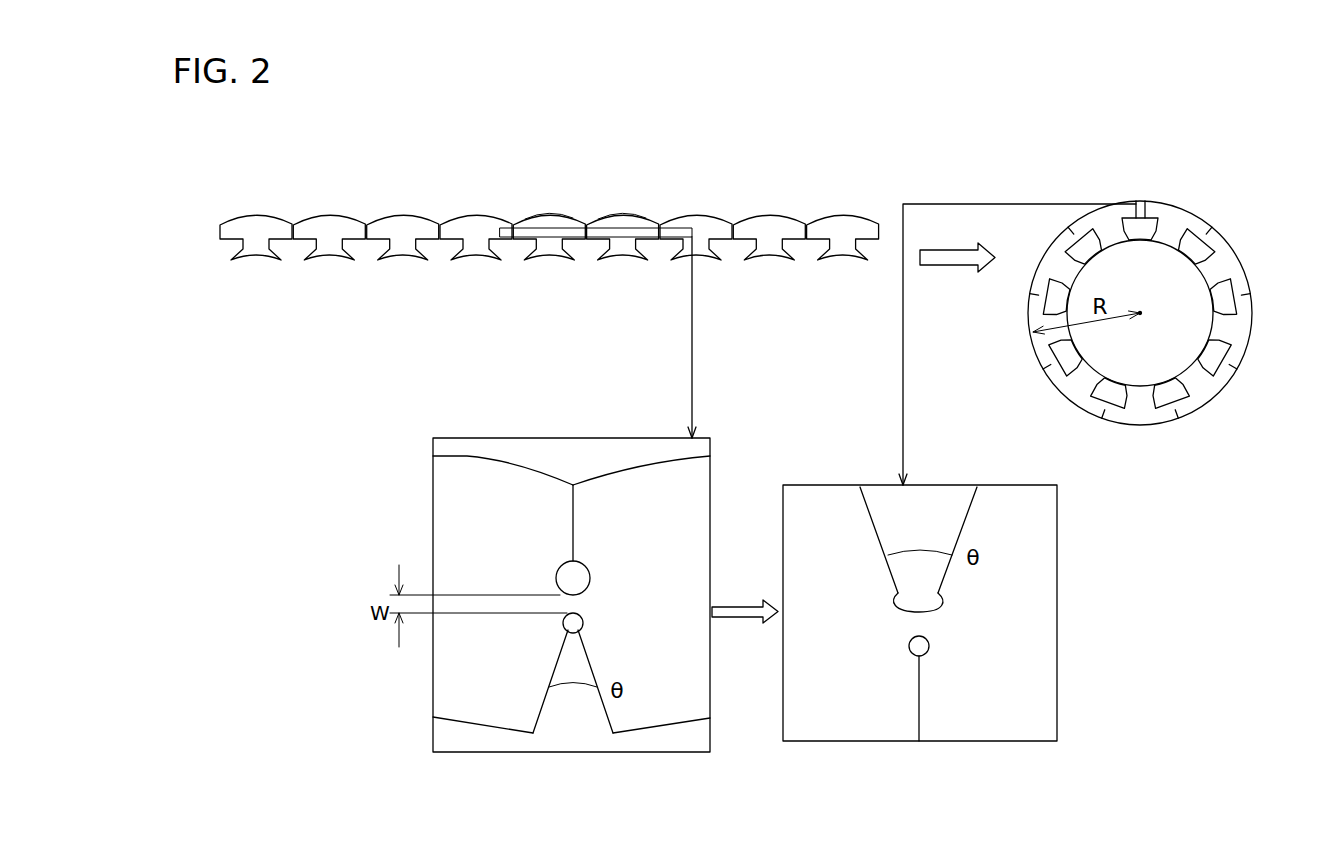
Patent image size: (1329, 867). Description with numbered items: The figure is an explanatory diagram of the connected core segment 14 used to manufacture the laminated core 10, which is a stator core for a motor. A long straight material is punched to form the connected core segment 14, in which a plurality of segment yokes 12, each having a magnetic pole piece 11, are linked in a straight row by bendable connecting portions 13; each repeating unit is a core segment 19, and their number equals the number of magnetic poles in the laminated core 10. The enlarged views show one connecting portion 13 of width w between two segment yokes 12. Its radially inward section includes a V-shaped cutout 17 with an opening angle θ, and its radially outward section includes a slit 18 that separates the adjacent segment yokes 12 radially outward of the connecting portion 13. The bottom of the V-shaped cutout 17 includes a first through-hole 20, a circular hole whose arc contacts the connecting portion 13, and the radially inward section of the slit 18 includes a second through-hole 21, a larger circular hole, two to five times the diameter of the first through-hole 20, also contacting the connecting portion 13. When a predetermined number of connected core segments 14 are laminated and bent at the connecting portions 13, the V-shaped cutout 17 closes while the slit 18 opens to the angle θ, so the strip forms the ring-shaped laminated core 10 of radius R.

The laminated core 10 is at (1202, 200).
The magnetic pole piece 11 is at (335, 248).
The segment yoke 12 is at (397, 227).
The connecting portion 13 is at (292, 228).
The connected core segment 14 is at (687, 203).
The V-shaped cutout 17 is at (577, 700).
The slit 18 is at (573, 532).
The core segment 19 is at (618, 215).
The first through-hole 20 is at (567, 633).
The second through-hole 21 is at (578, 577).